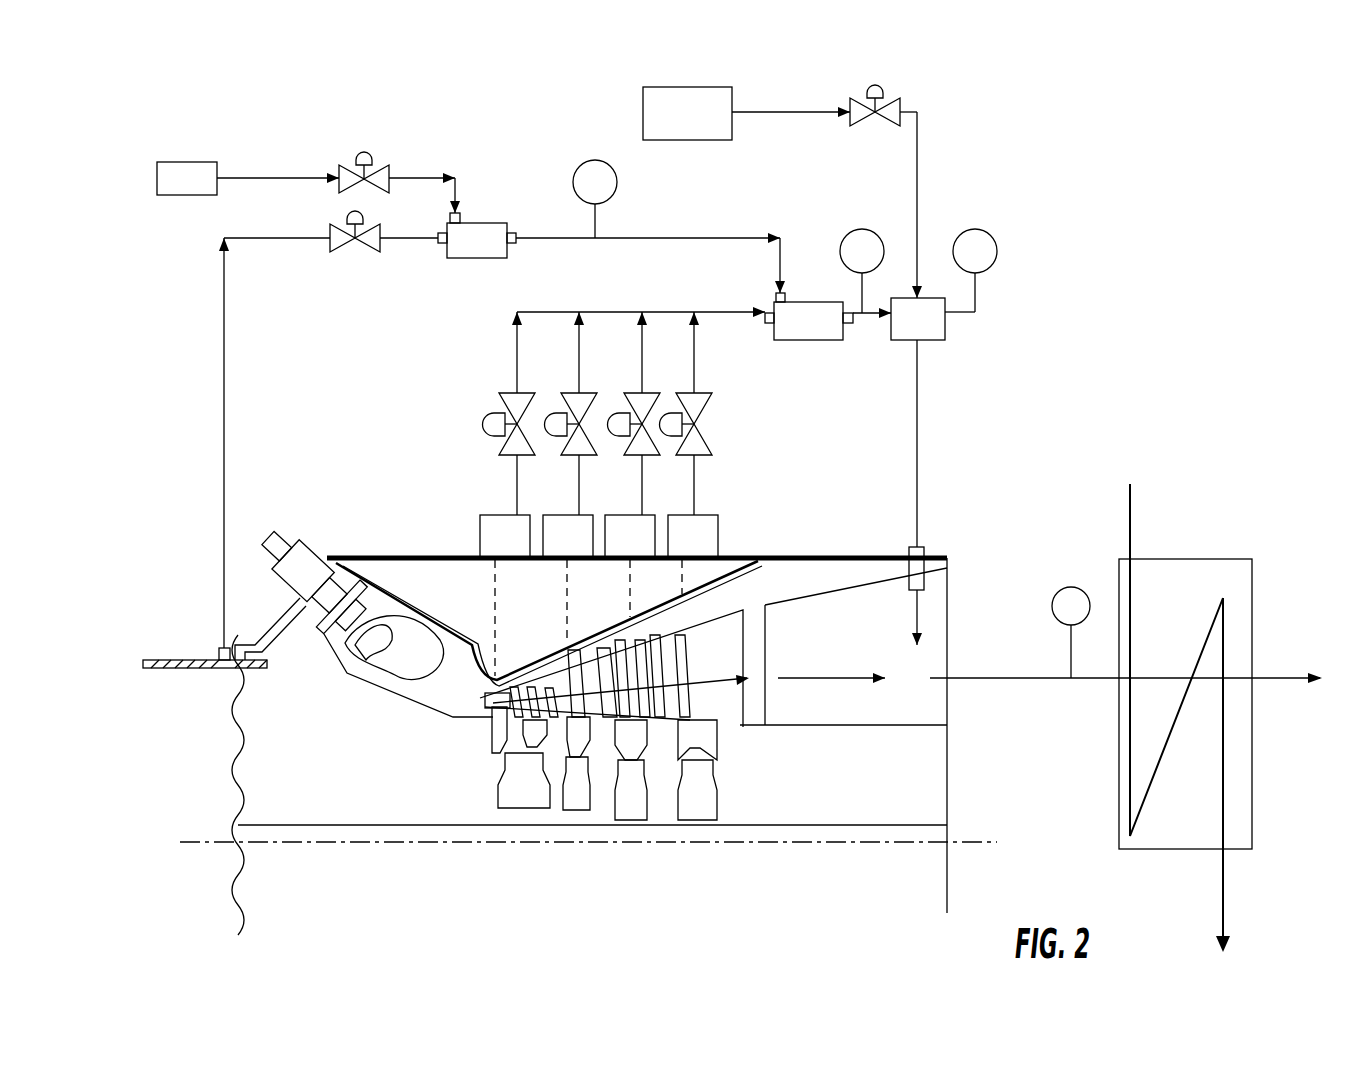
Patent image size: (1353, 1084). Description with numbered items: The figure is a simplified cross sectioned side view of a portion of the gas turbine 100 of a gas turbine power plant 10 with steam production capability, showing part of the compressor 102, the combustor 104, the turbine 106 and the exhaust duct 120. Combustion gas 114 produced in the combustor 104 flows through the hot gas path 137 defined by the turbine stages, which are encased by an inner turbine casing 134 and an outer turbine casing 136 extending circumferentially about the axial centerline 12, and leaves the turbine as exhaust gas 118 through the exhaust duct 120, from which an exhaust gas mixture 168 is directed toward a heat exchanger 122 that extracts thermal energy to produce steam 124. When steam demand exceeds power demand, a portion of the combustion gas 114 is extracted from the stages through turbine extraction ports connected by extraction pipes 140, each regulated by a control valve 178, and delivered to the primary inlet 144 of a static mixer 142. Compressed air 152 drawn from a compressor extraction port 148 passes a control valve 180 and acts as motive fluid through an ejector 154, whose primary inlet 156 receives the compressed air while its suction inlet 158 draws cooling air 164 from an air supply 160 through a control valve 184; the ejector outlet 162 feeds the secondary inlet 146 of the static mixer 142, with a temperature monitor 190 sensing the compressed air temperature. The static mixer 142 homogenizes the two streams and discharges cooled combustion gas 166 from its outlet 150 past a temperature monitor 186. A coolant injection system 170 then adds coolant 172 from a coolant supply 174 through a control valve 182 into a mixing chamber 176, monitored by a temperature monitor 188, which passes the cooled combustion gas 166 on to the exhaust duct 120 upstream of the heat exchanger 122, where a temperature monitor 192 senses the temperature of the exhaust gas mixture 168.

The gas turbine power plant 10 is at (1137, 176).
The axial centerline 12 is at (343, 845).
The gas turbine 100 is at (995, 486).
The compressor 102 is at (163, 643).
The combustor 104 is at (293, 562).
The turbine 106 is at (433, 852).
The combustion gas 114 is at (625, 312).
The exhaust gas 118 is at (817, 673).
The exhaust duct 120 is at (797, 852).
The heat exchanger 122 is at (1185, 559).
The steam 124 is at (1226, 911).
The inner turbine casing 134 is at (422, 585).
The outer turbine casing 136 is at (357, 553).
The hot gas path 137 is at (625, 678).
The extraction pipe 140 is at (493, 578).
The static mixer 142 is at (792, 334).
The primary inlet 144 is at (764, 312).
The secondary inlet 146 is at (786, 297).
The compressor extraction port 148 is at (220, 644).
The outlet 150 is at (848, 324).
The compressed air 152 is at (717, 237).
The ejector 154 is at (461, 254).
The primary inlet 156 is at (442, 243).
The suction inlet 158 is at (462, 221).
The air supply 160 is at (170, 192).
The outlet 162 is at (511, 243).
The air 164 is at (265, 173).
The cooled combustion gas 166 is at (859, 322).
The exhaust gas line 168 is at (937, 681).
The coolant injection system 170 is at (786, 84).
The coolant 172 is at (782, 114).
The coolant supply 174 is at (670, 125).
The mixing chamber 176 is at (902, 333).
The control valve 178 is at (499, 405).
The control valve 180 is at (338, 249).
The control valve 182 is at (901, 102).
The control valve 184 is at (338, 195).
The temperature monitor 186 is at (863, 229).
The temperature monitor 188 is at (997, 248).
The temperature monitor 190 is at (617, 182).
The temperature monitor 192 is at (1071, 587).